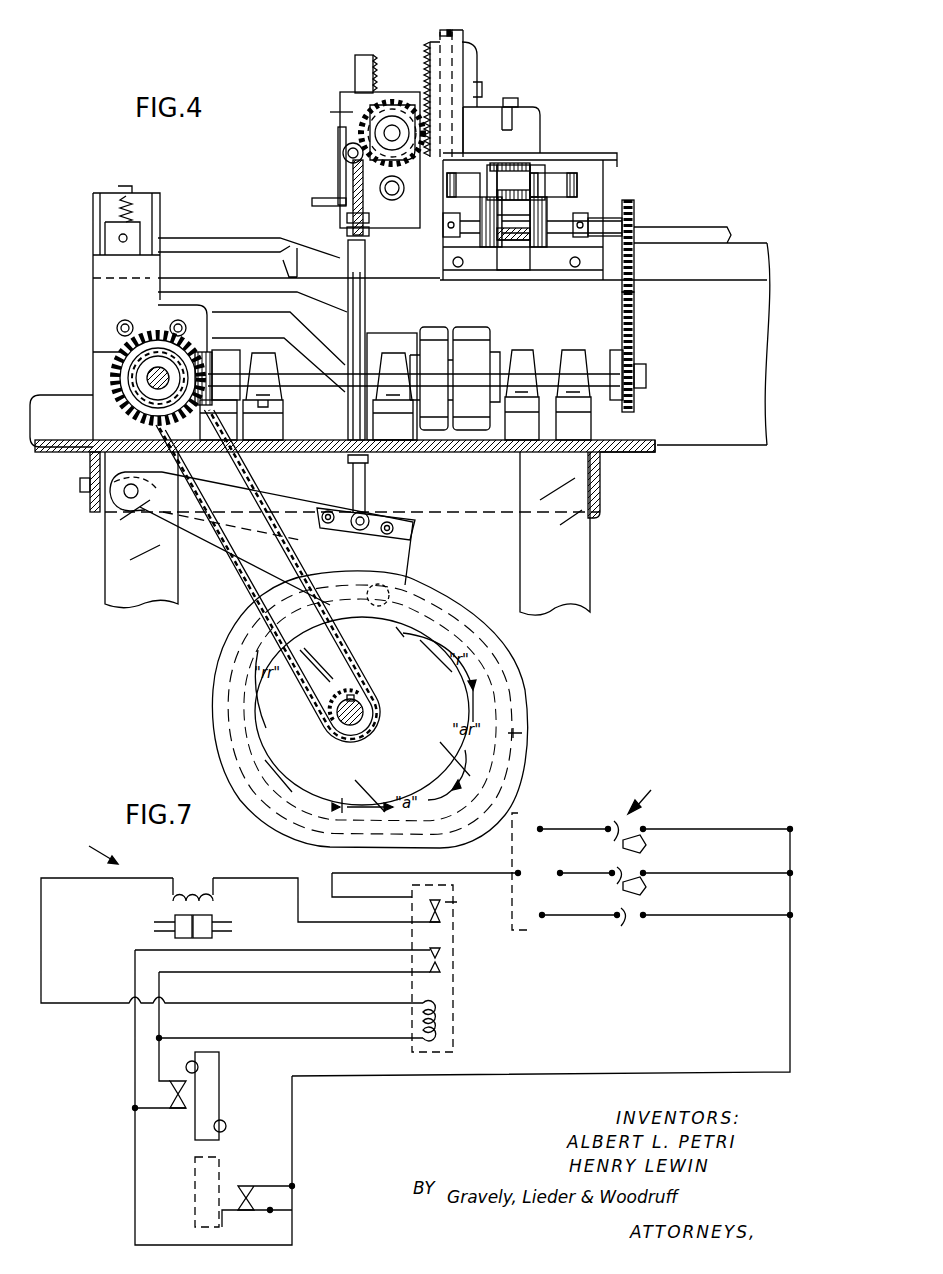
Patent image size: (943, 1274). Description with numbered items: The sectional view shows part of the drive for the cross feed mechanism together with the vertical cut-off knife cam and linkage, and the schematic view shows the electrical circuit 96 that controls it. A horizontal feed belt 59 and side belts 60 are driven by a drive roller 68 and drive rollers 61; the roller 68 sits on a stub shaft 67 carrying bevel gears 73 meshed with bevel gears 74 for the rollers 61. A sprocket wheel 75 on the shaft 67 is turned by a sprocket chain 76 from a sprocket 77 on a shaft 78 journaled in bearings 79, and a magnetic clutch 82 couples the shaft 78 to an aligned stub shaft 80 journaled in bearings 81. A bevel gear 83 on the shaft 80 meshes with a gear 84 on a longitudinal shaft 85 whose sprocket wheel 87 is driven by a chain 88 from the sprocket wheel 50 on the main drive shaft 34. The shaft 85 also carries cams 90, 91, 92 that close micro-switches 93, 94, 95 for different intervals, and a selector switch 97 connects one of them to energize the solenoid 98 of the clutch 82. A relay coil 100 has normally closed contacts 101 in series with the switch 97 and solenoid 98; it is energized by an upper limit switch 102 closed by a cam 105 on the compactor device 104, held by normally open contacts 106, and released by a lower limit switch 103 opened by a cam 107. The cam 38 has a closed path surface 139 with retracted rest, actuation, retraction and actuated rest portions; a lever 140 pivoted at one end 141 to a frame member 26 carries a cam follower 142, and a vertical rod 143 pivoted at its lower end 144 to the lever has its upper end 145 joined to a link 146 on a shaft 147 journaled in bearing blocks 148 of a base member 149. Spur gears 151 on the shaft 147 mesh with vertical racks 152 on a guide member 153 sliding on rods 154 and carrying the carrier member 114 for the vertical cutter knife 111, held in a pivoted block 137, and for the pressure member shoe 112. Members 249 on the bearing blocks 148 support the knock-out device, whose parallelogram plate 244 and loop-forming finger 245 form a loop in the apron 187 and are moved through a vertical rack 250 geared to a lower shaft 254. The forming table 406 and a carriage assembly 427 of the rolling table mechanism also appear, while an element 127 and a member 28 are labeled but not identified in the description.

In FIG. 4, the vertical toothed rack 250 is at (368, 56).
In FIG. 4, the members 249 is at (358, 92).
In FIG. 4, the spur gears 151 is at (388, 100).
In FIG. 4, the shaft 147 is at (394, 123).
In FIG. 4, the toothed vertical racks 152 is at (427, 42).
In FIG. 4, the vertical rods 154 is at (455, 33).
In FIG. 4, the guide member 153 is at (472, 58).
In FIG. 4, the carrier member 114 is at (480, 77).
In FIG. 4, the block 137 is at (538, 128).
In FIG. 4, the link 146 is at (345, 120).
In FIG. 4, the upper end of vertical rod 145 is at (345, 154).
In FIG. 4, the lower shaft 254 is at (340, 158).
In FIG. 4, the parallelogram-shaped plate 244 is at (380, 188).
In FIG. 4, the loop forming vertical plate or finger 245 is at (312, 204).
In FIG. 4, the bearing blocks 148 is at (350, 234).
In FIG. 4, the horizontal feed belt 59 is at (488, 197).
In FIG. 4, the drive pulleys or rollers 61 is at (458, 187).
In FIG. 4, the vertical cutter knife 111 is at (530, 162).
In FIG. 4, the shoe 112 is at (545, 166).
In FIG. 4, the spring 127 is at (520, 176).
In FIG. 4, the vertical feed belts 60 is at (578, 185).
In FIG. 4, the bevel gear 74 is at (575, 207).
In FIG. 4, the sprocket wheel 75 is at (637, 215).
In FIG. 4, the carriage assembly 427 is at (143, 193).
In FIG. 4, the flexible apron 187 is at (190, 246).
In FIG. 4, the forming table 406 is at (235, 275).
In FIG. 4, the stub shaft 85 is at (153, 350).
In FIG. 4, the gear 84 is at (207, 348).
In FIG. 4, the bevel gear 83 is at (214, 358).
In FIG. 4, the bearings 81 is at (270, 352).
In FIG. 4, the vertical rod 143 is at (348, 316).
In FIG. 4, the base member 149 is at (405, 334).
In FIG. 4, the stub shaft 67 is at (483, 250).
In FIG. 4, the drive roller 68 is at (517, 240).
In FIG. 4, the bevel gears 73 is at (490, 248).
In FIG. 4, the sprocket chain 76 is at (637, 328).
In FIG. 4, the sprocket 77 is at (640, 352).
In FIG. 4, the sprocket wheel 87 is at (103, 380).
In FIG. 4, the stub shaft 80 is at (312, 387).
In FIG. 7, the stub shaft 80 is at (172, 921).
In FIG. 4, the bearings 79 is at (512, 350).
In FIG. 4, the shaft 78 is at (593, 352).
In FIG. 7, the shaft 78 is at (226, 930).
In FIG. 4, the magnetic clutch 82 is at (458, 437).
In FIG. 7, the magnetic clutch 82 is at (240, 936).
In FIG. 4, the frame member 26 is at (90, 507).
In FIG. 4, the end of lever 141 is at (133, 498).
In FIG. 4, the lower end of vertical rod 144 is at (367, 512).
In FIG. 4, the lever 140 is at (410, 558).
In FIG. 4, the cam follower 142 is at (395, 586).
In FIG. 4, the support 28 is at (590, 580).
In FIG. 4, the chain 88 is at (248, 600).
In FIG. 4, the cam 38 is at (262, 718).
In FIG. 4, the main drive shaft 34 is at (333, 727).
In FIG. 4, the sprocket wheel 50 is at (380, 731).
In FIG. 4, the closed path surface 139 is at (493, 733).
In FIG. 7, the electrical circuit 96 is at (89, 848).
In FIG. 7, the solenoid 98 is at (192, 890).
In FIG. 7, the normally closed contacts 101 is at (440, 910).
In FIG. 7, the normally open contacts 106 is at (440, 958).
In FIG. 7, the relay coil 100 is at (440, 1020).
In FIG. 7, the cam 105 is at (190, 1061).
In FIG. 7, the compactor device 104 is at (220, 1118).
In FIG. 7, the cam 107 is at (226, 1128).
In FIG. 7, the normally open upper limit switch 102 is at (163, 1124).
In FIG. 7, the normally closed lower limit switch 103 is at (258, 1200).
In FIG. 7, the selector switch 97 is at (525, 828).
In FIG. 7, the micro-switch 93 is at (560, 834).
In FIG. 7, the micro-switch 94 is at (574, 865).
In FIG. 7, the micro-switch 95 is at (550, 929).
In FIG. 7, the cam 91 is at (648, 844).
In FIG. 7, the cam 92 is at (648, 887).
In FIG. 7, the cam 90 is at (653, 794).